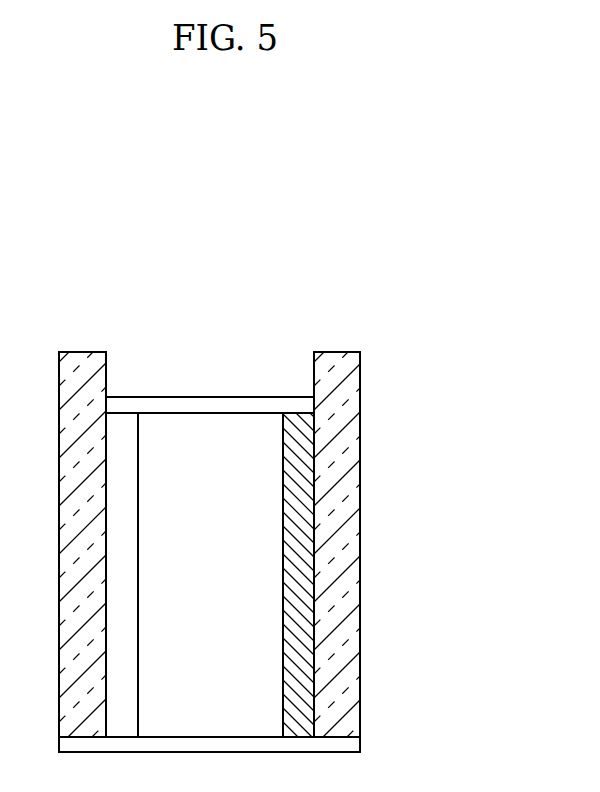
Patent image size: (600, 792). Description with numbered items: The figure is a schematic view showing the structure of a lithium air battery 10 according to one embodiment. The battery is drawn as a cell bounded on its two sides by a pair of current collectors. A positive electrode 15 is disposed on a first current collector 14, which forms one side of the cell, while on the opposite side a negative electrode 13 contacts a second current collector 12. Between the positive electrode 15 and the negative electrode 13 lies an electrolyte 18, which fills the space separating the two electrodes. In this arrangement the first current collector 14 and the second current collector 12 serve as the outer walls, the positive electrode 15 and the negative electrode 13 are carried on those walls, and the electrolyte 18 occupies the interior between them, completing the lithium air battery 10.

The lithium air battery 10 is at (292, 250).
The second current collector 12 is at (82, 370).
The negative electrode 13 is at (120, 428).
The first current collector 14 is at (338, 370).
The positive electrode 15 is at (300, 428).
The electrolyte 18 is at (200, 437).